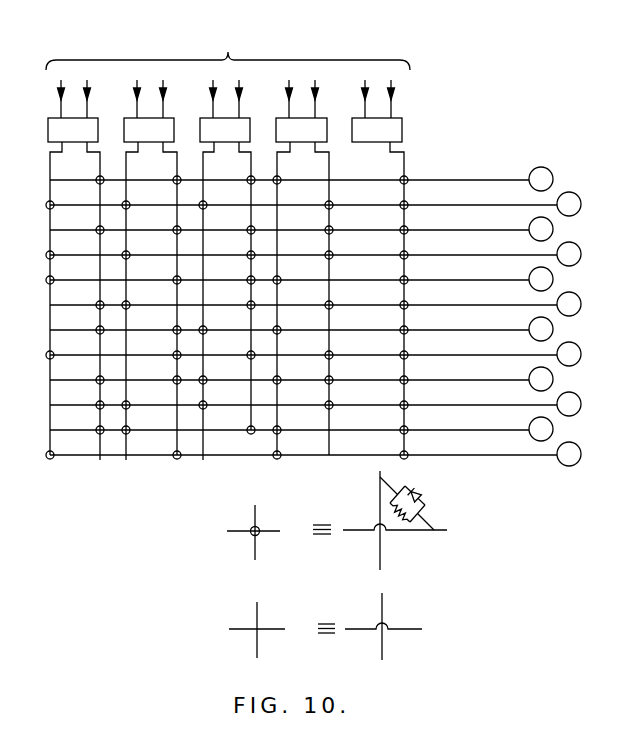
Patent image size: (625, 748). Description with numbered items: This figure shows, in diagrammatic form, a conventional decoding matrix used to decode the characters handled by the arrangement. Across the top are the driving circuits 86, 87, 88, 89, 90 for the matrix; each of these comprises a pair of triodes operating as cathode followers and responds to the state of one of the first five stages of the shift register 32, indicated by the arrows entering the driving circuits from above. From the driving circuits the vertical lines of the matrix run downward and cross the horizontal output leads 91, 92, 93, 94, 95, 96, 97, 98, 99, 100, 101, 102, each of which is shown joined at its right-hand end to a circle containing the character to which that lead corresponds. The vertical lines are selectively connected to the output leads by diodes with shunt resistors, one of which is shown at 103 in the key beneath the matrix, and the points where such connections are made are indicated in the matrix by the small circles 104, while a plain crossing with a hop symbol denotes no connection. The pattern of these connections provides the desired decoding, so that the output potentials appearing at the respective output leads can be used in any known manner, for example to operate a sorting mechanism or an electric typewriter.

The shift register 32 is at (228, 20).
The driving circuit 86 is at (47, 123).
The driving circuit 87 is at (124, 123).
The driving circuit 88 is at (200, 123).
The driving circuit 89 is at (278, 123).
The driving circuit 90 is at (354, 123).
The horizontal output lead 91 is at (301, 175).
The horizontal output lead 92 is at (313, 200).
The horizontal output lead 93 is at (301, 225).
The horizontal output lead 94 is at (313, 250).
The horizontal output lead 95 is at (299, 275).
The horizontal output lead 96 is at (315, 300).
The horizontal output lead 97 is at (301, 325).
The horizontal output lead 98 is at (313, 350).
The horizontal output lead 99 is at (301, 375).
The horizontal output lead 100 is at (315, 400).
The horizontal output lead 101 is at (301, 425).
The horizontal output lead 102 is at (313, 450).
The diode with shunt resistor 103 is at (425, 506).
The small circle 104 is at (250, 528).